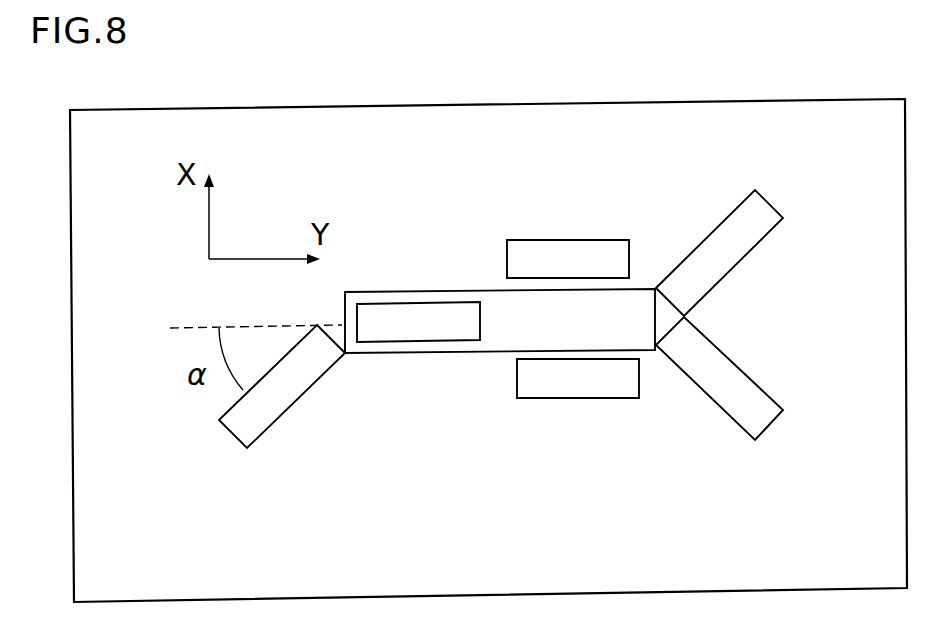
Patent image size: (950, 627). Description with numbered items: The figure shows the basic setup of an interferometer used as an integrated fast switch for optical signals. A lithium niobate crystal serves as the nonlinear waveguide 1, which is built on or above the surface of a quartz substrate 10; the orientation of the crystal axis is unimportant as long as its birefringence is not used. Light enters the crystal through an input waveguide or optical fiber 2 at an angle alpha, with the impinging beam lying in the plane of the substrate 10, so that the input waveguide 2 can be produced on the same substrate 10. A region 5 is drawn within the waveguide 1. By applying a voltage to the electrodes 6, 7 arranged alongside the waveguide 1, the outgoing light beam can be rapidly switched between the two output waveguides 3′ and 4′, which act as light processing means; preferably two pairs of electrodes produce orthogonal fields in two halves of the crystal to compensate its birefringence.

The substrate 10 is at (488, 350).
The waveguide 1 is at (500, 321).
The input waveguide 2 is at (282, 386).
The waveguide 3′ is at (719, 253).
The waveguide 4′ is at (719, 378).
The waveguide core 5 is at (418, 322).
The electrode 6 is at (578, 378).
The electrode 7 is at (568, 259).